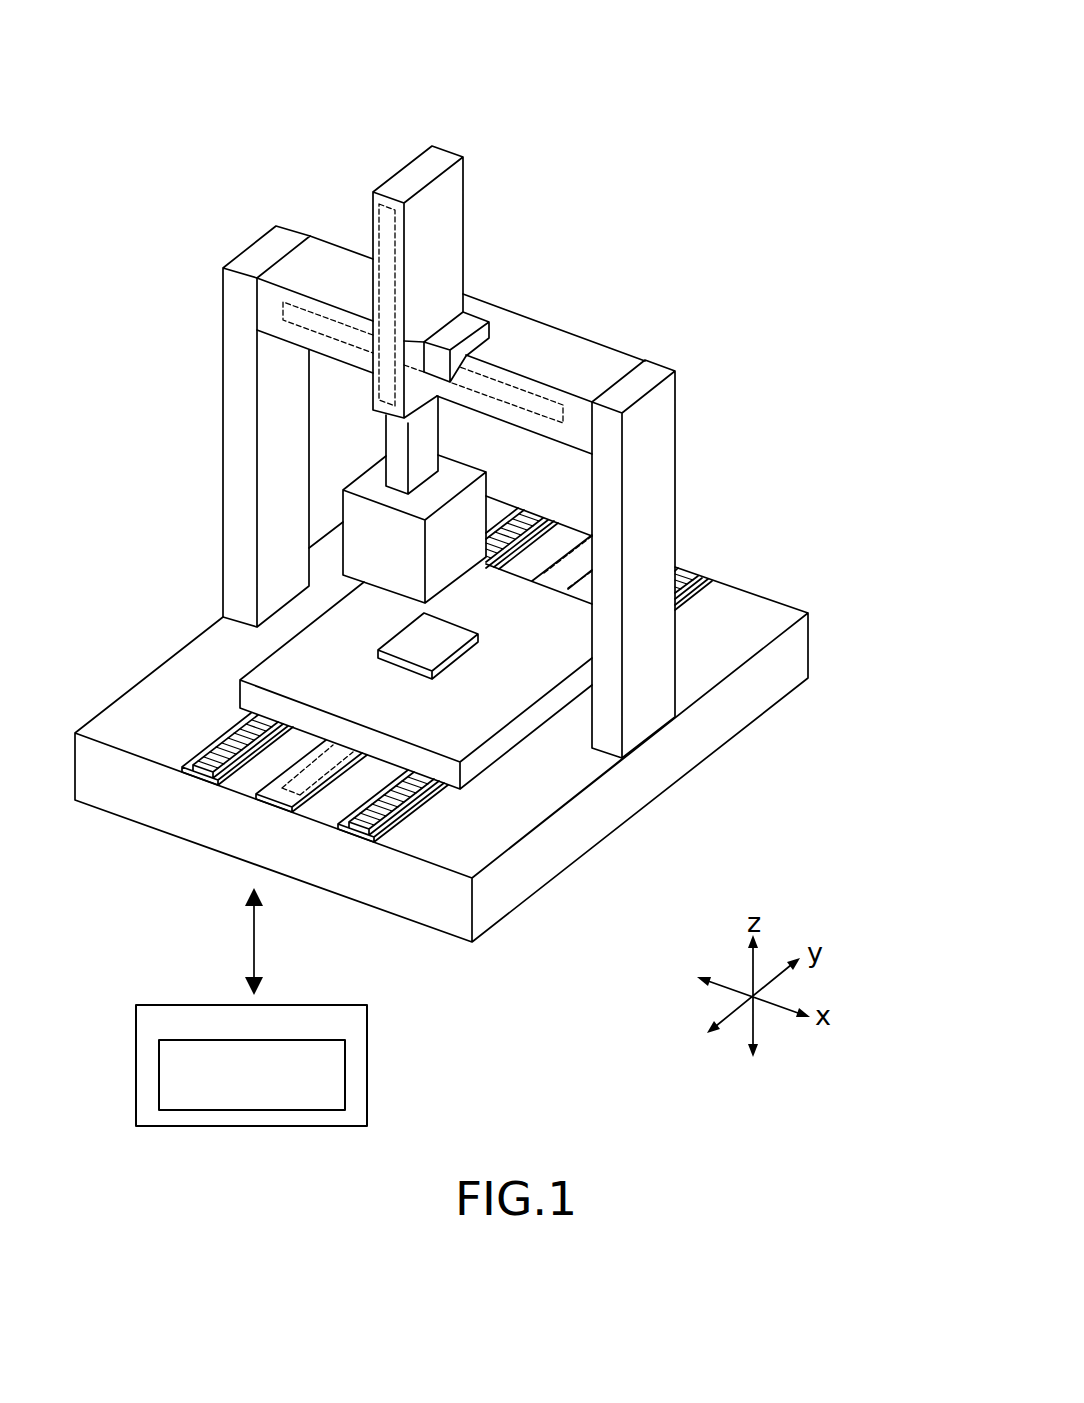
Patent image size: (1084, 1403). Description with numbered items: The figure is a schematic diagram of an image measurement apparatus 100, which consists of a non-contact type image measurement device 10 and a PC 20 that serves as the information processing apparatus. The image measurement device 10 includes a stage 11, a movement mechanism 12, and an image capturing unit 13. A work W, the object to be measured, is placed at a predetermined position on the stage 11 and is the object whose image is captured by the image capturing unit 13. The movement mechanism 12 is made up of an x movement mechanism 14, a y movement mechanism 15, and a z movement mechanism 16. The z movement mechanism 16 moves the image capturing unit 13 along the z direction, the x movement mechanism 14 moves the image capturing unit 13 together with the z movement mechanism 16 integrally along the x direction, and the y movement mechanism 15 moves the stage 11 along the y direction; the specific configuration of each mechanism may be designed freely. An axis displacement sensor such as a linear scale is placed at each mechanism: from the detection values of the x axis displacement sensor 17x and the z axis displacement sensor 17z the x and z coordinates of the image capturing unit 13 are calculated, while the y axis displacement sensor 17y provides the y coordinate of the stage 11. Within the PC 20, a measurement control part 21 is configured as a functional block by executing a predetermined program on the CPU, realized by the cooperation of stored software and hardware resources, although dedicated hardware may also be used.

The image measurement apparatus 100 is at (474, 568).
The image measurement device 10 is at (246, 206).
The stage 11 is at (278, 662).
The movement mechanism 12 is at (565, 452).
The image capturing unit 13 is at (463, 550).
The x movement mechanism 14 is at (610, 363).
The y movement mechanism 15 is at (710, 577).
The z movement mechanism 16 is at (437, 233).
The x axis displacement sensor 17x is at (283, 308).
The y axis displacement sensor 17y is at (282, 789).
The z axis displacement sensor 17z is at (373, 216).
The PC 20 is at (277, 1031).
The measurement control part 21 is at (345, 1070).
The work W is at (418, 650).